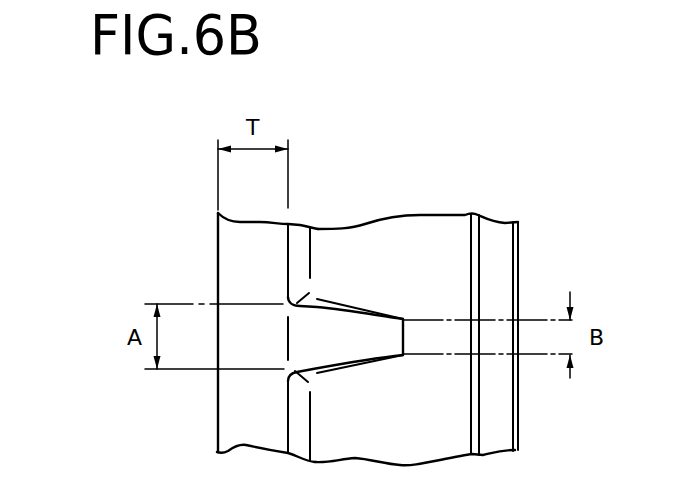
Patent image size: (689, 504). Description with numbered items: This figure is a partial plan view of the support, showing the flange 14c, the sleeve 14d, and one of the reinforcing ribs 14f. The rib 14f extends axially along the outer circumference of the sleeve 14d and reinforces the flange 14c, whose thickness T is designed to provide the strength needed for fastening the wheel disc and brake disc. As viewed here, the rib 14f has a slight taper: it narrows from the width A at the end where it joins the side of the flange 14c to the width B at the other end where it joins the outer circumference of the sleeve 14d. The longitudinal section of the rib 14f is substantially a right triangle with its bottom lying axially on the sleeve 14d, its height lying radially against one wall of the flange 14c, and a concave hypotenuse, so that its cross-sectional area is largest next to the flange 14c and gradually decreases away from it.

The flange 14c is at (230, 289).
The sleeve 14d is at (437, 236).
The rib 14f is at (342, 328).